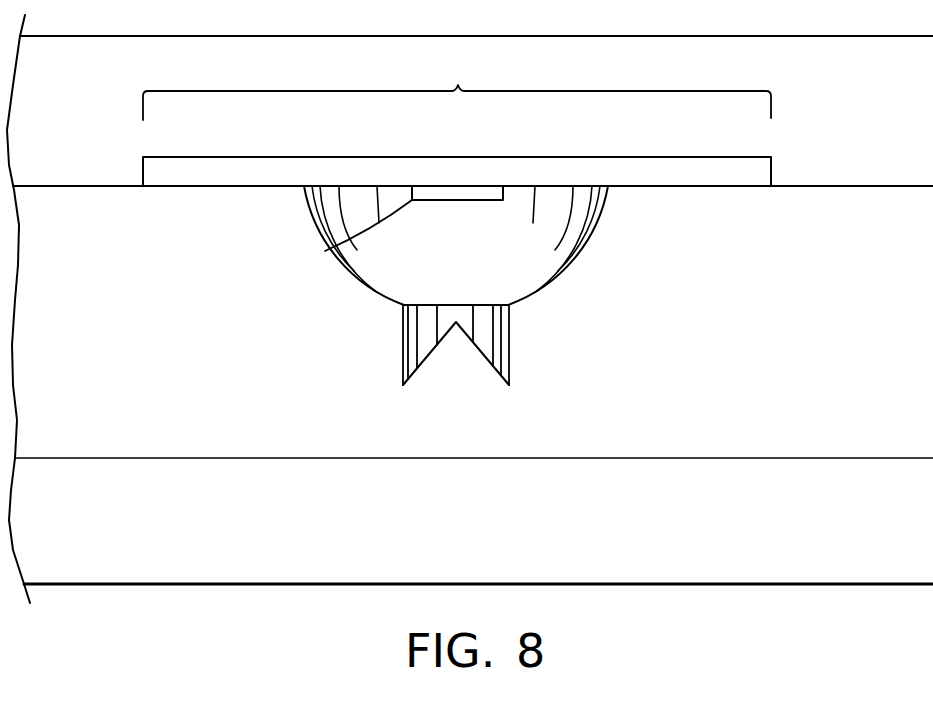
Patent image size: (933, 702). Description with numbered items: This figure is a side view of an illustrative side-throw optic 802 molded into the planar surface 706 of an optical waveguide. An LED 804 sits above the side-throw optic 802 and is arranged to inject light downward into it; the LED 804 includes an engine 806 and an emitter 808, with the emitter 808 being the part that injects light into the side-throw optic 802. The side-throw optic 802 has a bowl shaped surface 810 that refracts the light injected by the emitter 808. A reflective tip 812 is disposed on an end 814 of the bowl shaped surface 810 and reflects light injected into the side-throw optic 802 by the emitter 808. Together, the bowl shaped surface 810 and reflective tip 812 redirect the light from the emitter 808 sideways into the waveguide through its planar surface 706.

The planar surface 706 is at (818, 186).
The side-throw optic 802 is at (477, 306).
The LED 804 is at (457, 88).
The engine 806 is at (162, 155).
The emitter 808 is at (325, 251).
The bowl shaped surface 810 is at (581, 258).
The reflective tip 812 is at (542, 331).
The end 814 is at (402, 306).